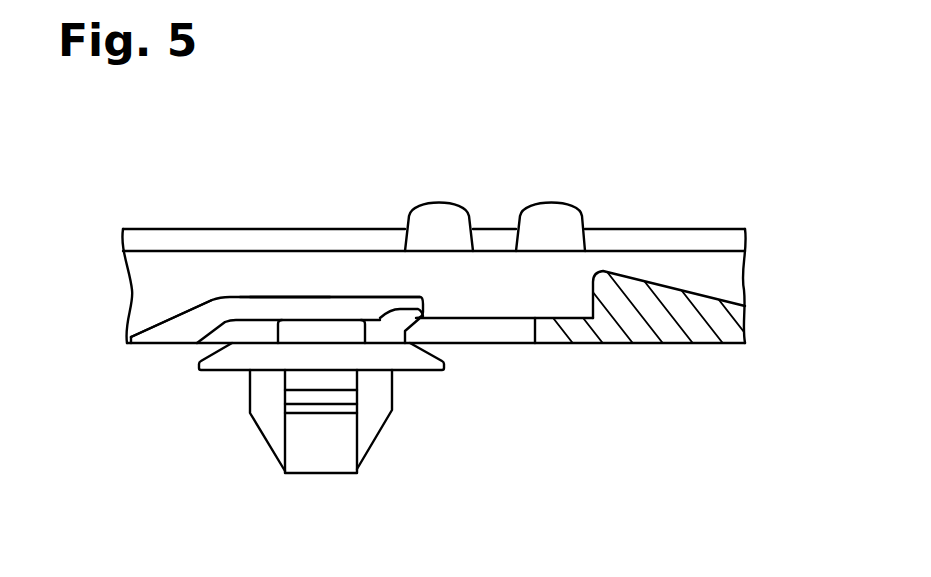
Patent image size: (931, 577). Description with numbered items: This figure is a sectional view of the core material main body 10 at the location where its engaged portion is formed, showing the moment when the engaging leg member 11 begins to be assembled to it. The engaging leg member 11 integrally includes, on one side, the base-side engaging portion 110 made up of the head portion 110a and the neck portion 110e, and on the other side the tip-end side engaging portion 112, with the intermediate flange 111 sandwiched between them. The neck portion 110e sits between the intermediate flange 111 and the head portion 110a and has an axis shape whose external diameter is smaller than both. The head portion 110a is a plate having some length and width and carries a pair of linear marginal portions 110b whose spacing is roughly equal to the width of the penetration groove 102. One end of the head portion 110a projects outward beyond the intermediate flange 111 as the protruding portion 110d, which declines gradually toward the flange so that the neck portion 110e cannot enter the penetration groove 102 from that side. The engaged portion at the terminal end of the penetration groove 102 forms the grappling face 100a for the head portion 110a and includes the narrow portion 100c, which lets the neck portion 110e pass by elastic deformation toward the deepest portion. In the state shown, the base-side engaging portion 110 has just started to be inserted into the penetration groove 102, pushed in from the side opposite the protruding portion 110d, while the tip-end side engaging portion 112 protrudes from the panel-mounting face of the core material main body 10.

The core material main body 10 is at (710, 335).
The grappling face 100a is at (570, 322).
The narrow portion 100c is at (440, 330).
The penetration groove 102 is at (253, 262).
The base-side engaging portion 110 is at (343, 320).
The head portion 110a is at (362, 302).
The linear marginal portions 110b is at (287, 297).
The protruding portion 110d is at (188, 312).
The neck portion 110e is at (328, 272).
The engaging leg member 11 is at (372, 437).
The intermediate flange 111 is at (217, 373).
The tip-end side engaging portion 112 is at (325, 398).